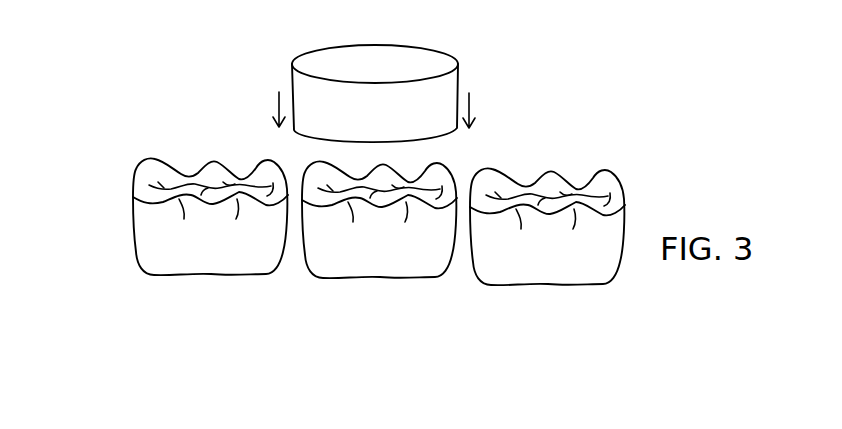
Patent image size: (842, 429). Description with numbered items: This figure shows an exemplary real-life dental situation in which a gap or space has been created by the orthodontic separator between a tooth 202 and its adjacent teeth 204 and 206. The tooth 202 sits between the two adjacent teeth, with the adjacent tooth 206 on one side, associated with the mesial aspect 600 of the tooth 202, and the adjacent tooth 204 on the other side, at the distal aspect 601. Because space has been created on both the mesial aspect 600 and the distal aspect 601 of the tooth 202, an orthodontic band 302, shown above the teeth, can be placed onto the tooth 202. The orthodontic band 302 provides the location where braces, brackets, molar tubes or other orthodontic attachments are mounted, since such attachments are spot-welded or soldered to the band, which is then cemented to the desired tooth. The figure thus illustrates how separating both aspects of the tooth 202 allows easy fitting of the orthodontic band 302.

The orthodontic band 302 is at (457, 78).
The adjacent tooth 206 is at (133, 178).
The tooth 202 is at (345, 280).
The adjacent tooth 204 is at (625, 207).
The mesial aspect 600 is at (297, 275).
The distal aspect 601 is at (469, 280).